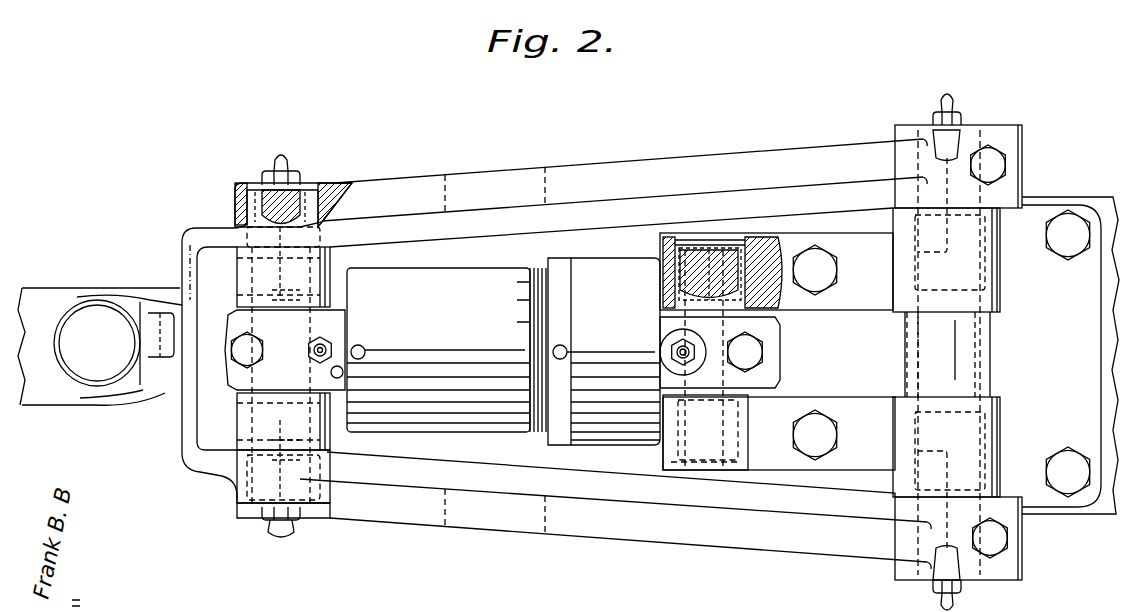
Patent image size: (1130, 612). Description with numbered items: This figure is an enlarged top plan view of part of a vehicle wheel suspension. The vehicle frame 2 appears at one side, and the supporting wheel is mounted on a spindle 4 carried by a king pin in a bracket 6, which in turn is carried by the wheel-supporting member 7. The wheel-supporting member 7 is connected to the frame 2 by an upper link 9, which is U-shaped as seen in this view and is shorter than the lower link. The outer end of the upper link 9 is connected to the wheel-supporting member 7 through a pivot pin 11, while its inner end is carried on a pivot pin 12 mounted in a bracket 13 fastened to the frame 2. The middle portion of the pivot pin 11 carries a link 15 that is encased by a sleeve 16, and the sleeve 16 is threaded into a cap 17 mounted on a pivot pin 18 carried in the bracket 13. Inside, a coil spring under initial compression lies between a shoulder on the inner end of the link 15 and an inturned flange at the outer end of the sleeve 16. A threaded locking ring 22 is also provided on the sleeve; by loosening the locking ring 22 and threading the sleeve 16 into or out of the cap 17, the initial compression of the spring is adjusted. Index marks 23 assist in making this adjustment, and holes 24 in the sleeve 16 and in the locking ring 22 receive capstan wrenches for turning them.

The vehicle frame 2 is at (1078, 507).
The spindle 4 is at (44, 302).
The bracket 6 is at (146, 384).
The wheel-supporting member 7 is at (240, 423).
The upper link 9 is at (632, 173).
The pivot pin 11 is at (240, 272).
The pivot pin 12 is at (904, 358).
The bracket 13 is at (968, 293).
The link 15 is at (330, 317).
The sleeve 16 is at (426, 268).
The cap 17 is at (632, 260).
The pivot pin 18 is at (768, 322).
The locking ring 22 is at (553, 277).
The index marks 23 is at (516, 282).
The holes 24 is at (403, 350).